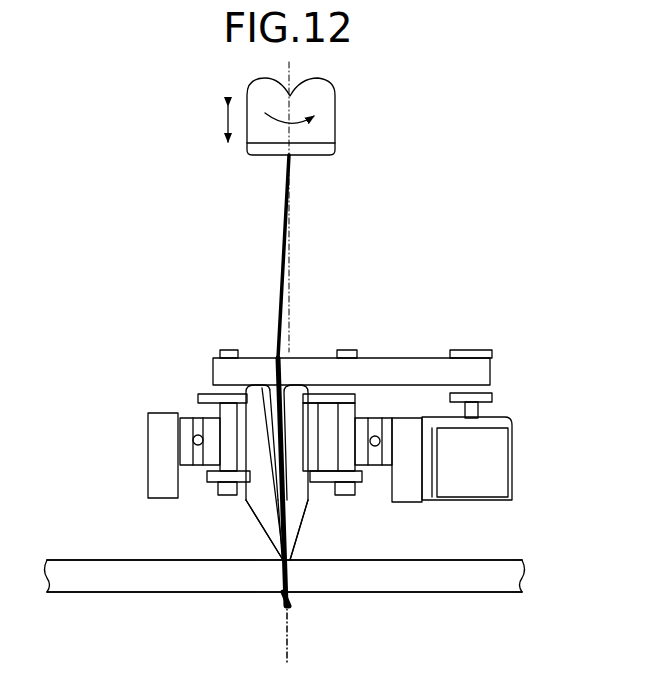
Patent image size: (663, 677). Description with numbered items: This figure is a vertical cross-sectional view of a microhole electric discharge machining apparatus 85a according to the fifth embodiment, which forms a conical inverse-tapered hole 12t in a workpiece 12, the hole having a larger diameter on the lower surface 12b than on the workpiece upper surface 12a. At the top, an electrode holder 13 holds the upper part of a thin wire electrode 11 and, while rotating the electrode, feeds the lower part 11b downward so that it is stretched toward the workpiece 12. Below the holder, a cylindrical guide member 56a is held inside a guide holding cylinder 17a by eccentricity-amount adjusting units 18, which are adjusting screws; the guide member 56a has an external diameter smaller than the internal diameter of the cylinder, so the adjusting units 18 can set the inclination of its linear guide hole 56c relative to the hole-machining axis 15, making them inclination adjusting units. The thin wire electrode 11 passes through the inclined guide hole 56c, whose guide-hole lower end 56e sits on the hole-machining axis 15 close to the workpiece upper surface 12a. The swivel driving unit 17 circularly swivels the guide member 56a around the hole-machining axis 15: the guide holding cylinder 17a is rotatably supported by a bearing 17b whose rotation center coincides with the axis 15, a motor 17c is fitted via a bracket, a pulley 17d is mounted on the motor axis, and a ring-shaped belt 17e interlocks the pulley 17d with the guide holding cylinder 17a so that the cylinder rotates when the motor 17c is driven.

The electrode holder 13 is at (336, 118).
The thin wire electrode 11 is at (287, 197).
The microhole electric discharge machining apparatus 85a is at (456, 164).
The swivel driving unit 17 is at (480, 302).
The guide holding cylinder 17a is at (346, 350).
The bearing 17b is at (386, 427).
The motor 17c is at (512, 460).
The pulley 17d is at (490, 352).
The ring-shaped belt 17e is at (440, 357).
The eccentricity-amount adjusting units 18 is at (196, 390).
The guide member 56a is at (263, 505).
The guide hole 56c is at (263, 532).
The guide-hole lower end 56e is at (282, 568).
The workpiece 12 is at (94, 592).
The workpiece upper surface 12a is at (84, 560).
The lower surface 12b is at (140, 592).
The conical inverse-tapered hole 12t is at (283, 597).
The lower part 11b is at (297, 598).
The hole-machining axis 15 is at (294, 622).